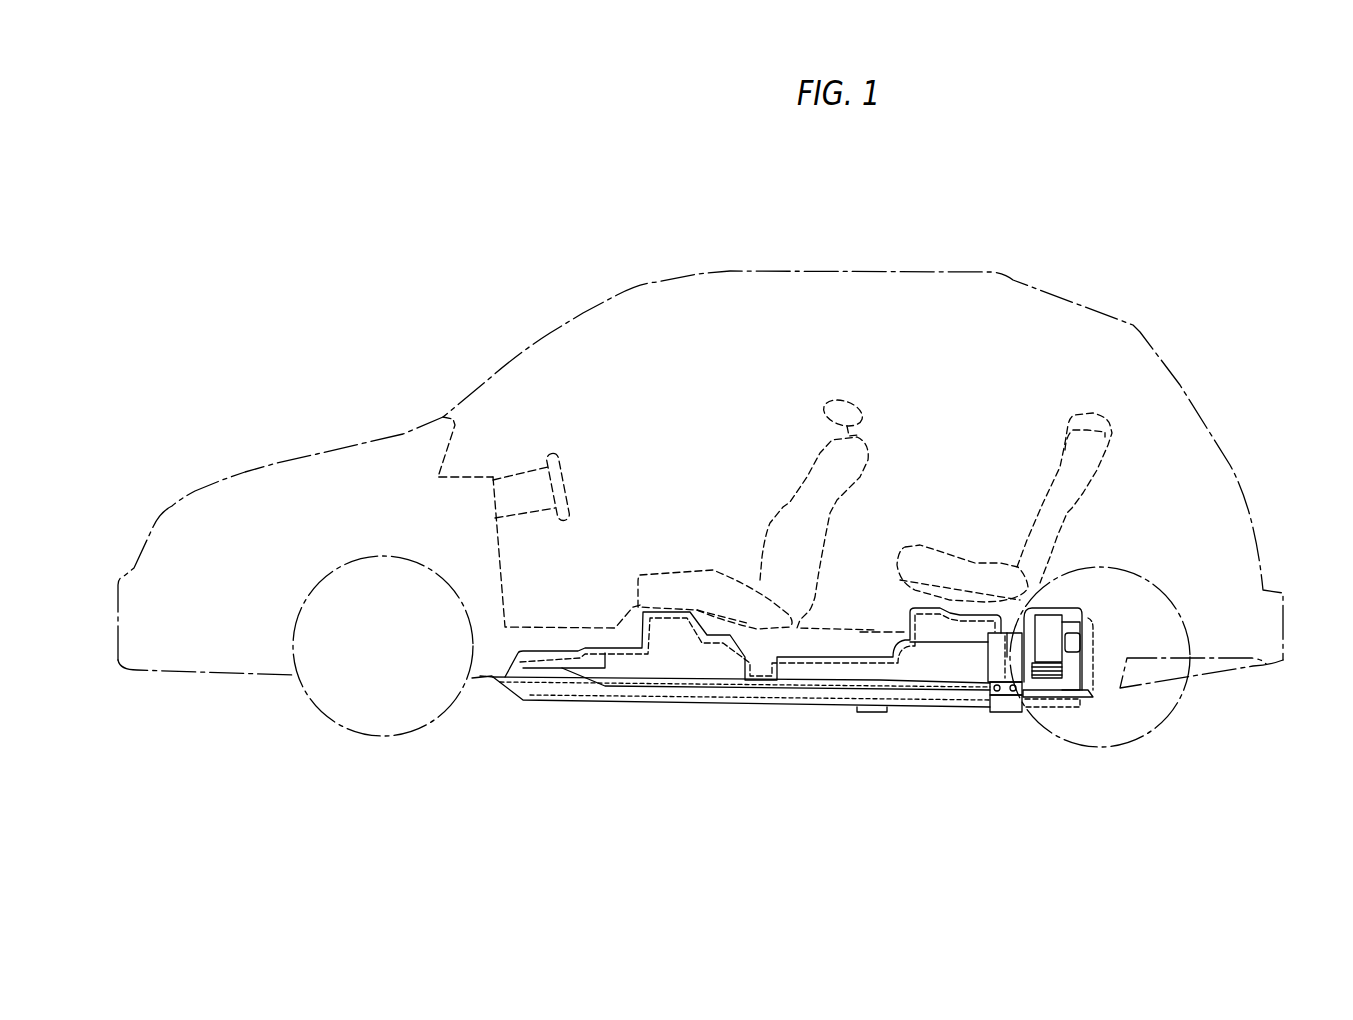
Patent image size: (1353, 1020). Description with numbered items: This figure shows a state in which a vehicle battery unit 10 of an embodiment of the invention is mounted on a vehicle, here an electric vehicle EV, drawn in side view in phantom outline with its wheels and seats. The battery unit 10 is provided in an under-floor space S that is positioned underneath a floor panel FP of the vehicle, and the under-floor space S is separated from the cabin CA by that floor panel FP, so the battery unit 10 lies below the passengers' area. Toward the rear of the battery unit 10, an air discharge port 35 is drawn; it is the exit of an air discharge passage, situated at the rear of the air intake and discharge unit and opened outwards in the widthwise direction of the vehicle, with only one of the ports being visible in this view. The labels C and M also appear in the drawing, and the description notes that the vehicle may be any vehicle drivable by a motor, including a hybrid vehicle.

The vehicle battery unit 10 is at (546, 702).
The air discharge port 35 is at (1080, 645).
The cross member C is at (772, 697).
The cabin CA is at (995, 333).
The electric vehicle EV is at (1186, 335).
The floor panel FP is at (845, 628).
The motor M is at (935, 632).
The under-floor space S is at (758, 655).